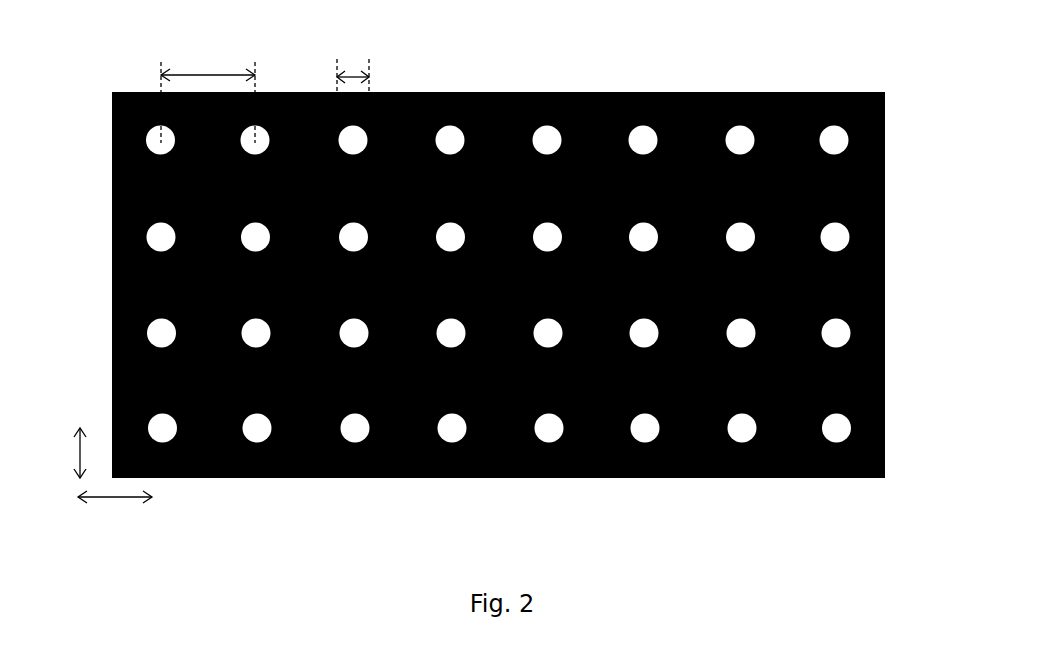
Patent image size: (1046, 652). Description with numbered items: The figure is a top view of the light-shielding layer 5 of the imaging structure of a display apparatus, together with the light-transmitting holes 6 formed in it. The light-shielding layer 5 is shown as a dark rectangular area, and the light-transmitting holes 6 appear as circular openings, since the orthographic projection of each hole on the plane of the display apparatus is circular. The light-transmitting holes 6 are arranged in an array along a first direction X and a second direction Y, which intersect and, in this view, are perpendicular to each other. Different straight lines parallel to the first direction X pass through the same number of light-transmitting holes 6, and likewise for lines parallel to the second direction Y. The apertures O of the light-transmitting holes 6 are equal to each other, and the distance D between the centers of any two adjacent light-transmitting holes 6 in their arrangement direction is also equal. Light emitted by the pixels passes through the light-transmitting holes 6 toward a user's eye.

The light-shielding layer 5 is at (885, 188).
The light-transmitting holes 6 is at (834, 142).
The distance between centers of adjacent light-transmitting holes D is at (208, 91).
The aperture of the light-transmitting hole O is at (353, 64).
The first direction X is at (115, 515).
The second direction Y is at (66, 453).